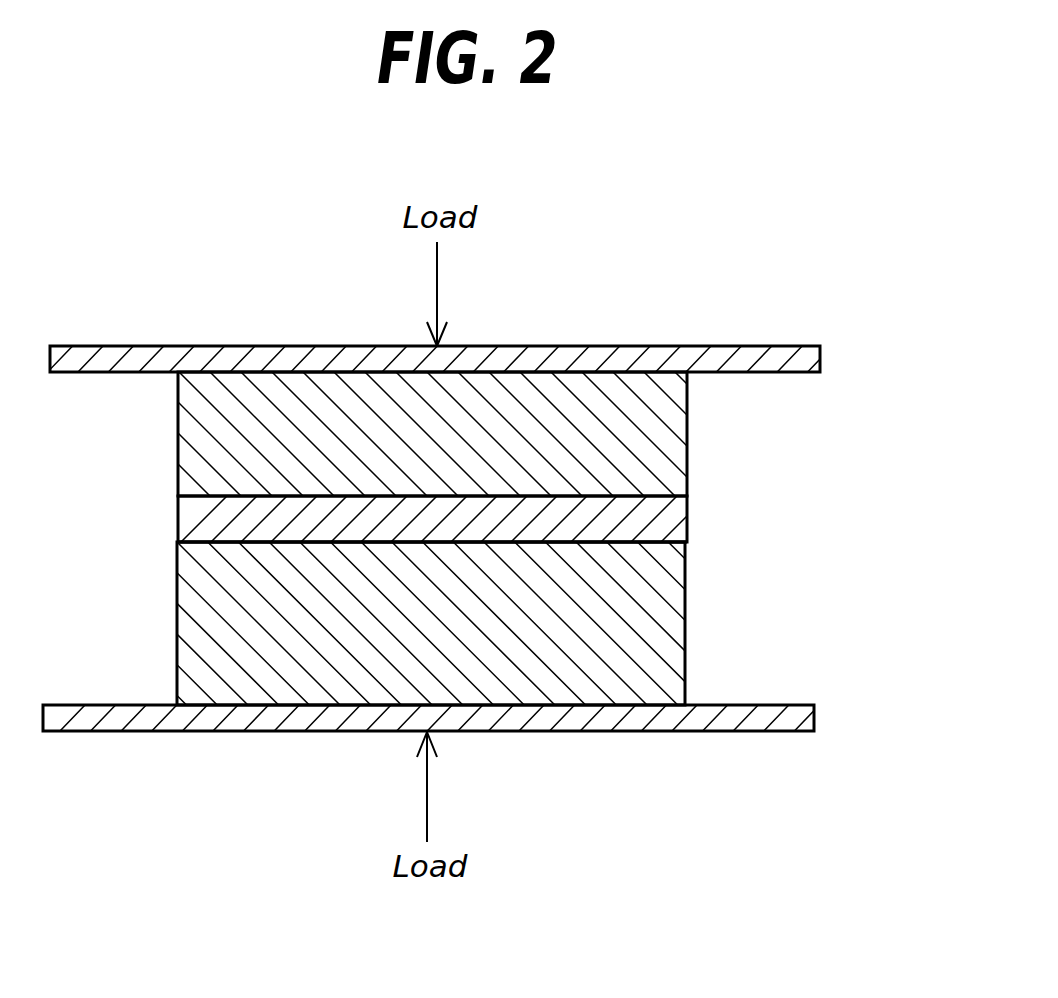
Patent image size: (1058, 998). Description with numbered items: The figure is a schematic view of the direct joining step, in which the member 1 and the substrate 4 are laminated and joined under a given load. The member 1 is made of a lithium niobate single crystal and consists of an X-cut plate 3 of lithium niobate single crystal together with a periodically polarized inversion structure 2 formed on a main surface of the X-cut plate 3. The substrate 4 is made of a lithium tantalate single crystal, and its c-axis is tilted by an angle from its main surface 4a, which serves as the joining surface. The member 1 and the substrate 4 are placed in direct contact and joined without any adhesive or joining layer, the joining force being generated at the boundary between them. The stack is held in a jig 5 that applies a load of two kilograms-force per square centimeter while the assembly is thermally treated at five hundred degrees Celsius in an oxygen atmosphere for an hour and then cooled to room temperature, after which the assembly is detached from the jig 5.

The member 1 is at (470, 485).
The periodically polarized inversion structure 2 is at (642, 515).
The X-cut plate 3 is at (640, 422).
The substrate 4 is at (628, 628).
The main surface 4a is at (313, 543).
The jig 5 is at (745, 358).